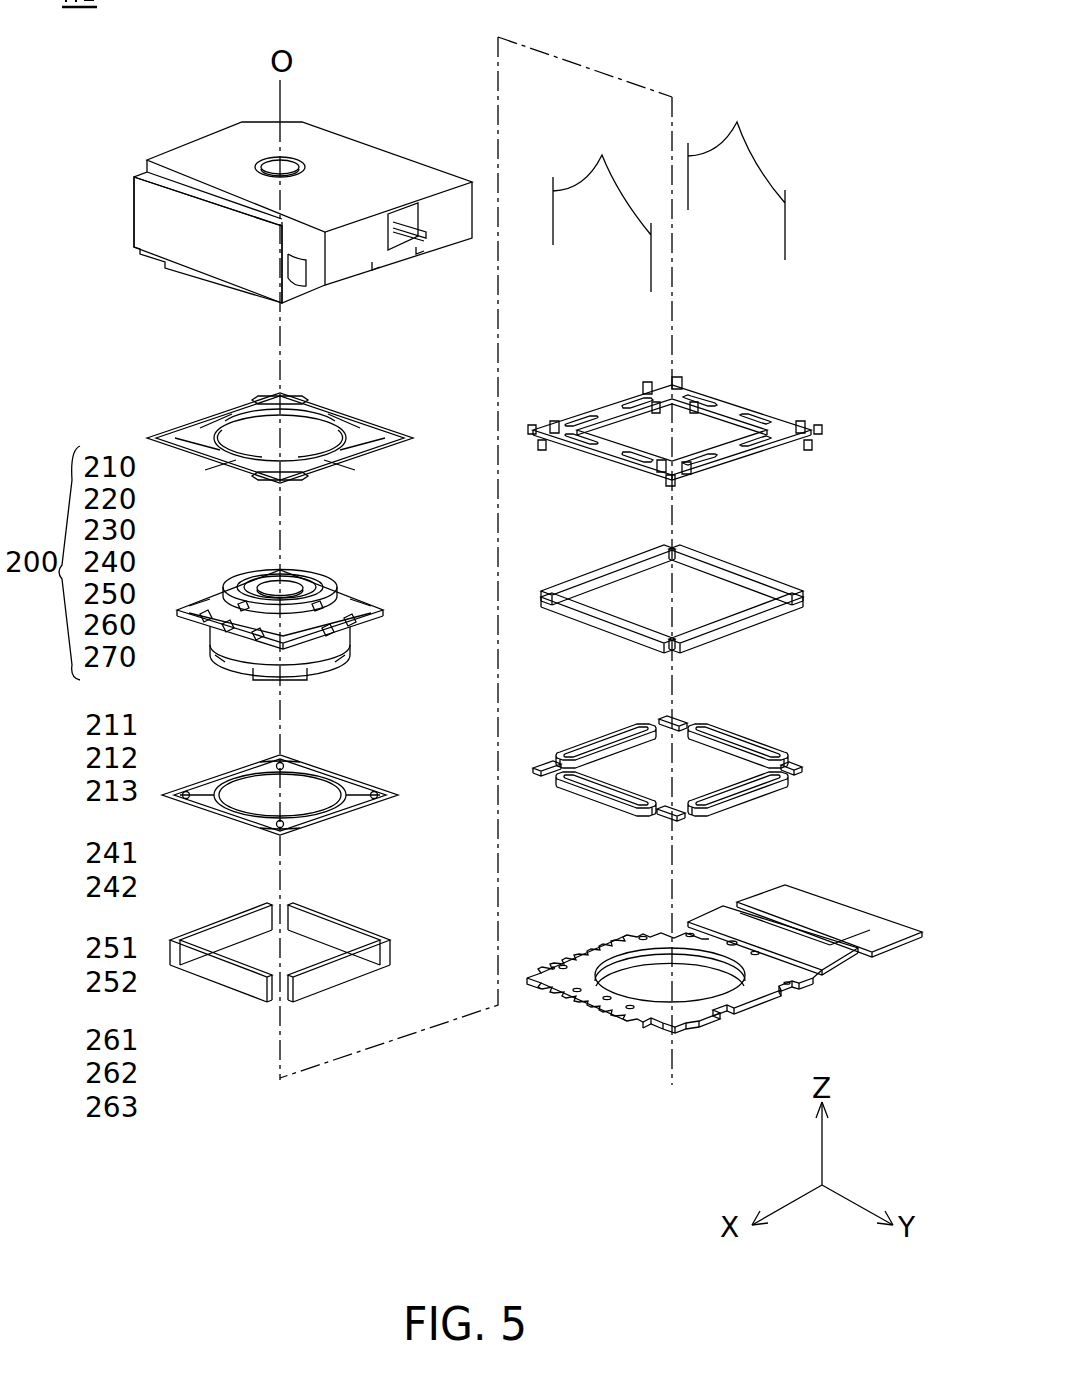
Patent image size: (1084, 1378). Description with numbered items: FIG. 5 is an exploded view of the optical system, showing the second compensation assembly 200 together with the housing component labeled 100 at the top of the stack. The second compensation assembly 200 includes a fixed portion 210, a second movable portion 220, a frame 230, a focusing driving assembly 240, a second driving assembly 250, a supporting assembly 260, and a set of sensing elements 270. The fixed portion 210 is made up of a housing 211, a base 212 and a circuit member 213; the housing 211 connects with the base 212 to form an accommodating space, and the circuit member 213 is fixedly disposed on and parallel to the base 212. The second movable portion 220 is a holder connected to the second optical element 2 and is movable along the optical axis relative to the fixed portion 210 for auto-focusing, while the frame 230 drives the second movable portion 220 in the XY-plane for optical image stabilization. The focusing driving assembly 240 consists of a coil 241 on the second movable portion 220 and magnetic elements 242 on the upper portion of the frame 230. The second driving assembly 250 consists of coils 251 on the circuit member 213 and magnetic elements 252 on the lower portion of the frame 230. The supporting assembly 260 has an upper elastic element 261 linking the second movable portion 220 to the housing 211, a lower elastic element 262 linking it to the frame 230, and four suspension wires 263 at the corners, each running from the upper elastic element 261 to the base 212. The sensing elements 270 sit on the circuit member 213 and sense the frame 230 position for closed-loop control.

The housing 100 is at (303, 214).
The second compensation assembly 200 is at (143, 378).
The fixed portion 210 is at (72, 718).
The housing 211 is at (225, 262).
The base 212 is at (720, 1010).
The circuit member 213 is at (599, 939).
The second movable portion 220 is at (312, 608).
The frame 230 is at (725, 396).
The focusing driving assembly 240 is at (72, 845).
The coil 241 is at (368, 618).
The magnetic elements 242 is at (360, 903).
The second driving assembly 250 is at (72, 940).
The coils 251 is at (767, 729).
The magnetic elements 252 is at (762, 555).
The supporting assembly 260 is at (72, 1033).
The upper elastic element 261 is at (372, 419).
The lower elastic element 262 is at (378, 786).
The suspension wires 263 is at (669, 191).
The sensing elements 270 is at (545, 758).
The second optical element 2 is at (318, 575).